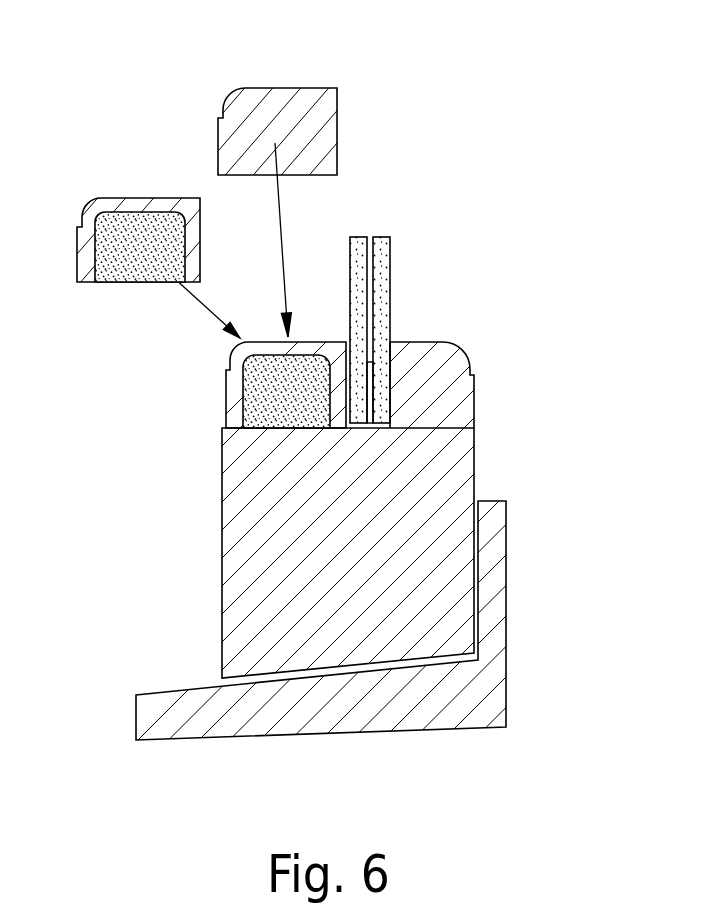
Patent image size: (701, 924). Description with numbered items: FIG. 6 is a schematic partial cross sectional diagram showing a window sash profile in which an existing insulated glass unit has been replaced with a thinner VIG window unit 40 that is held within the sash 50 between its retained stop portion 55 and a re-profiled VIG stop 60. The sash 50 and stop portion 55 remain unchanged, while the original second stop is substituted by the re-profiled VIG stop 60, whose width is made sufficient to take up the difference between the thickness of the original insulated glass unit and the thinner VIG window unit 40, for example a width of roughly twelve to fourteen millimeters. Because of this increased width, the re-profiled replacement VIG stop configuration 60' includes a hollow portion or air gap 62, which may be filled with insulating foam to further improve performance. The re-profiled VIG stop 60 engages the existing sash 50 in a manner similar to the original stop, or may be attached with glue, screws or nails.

The re-profiled VIG stop 60 is at (291, 118).
The re-profiled replacement VIG stop configuration 60' is at (151, 223).
The air gap 62 is at (118, 268).
The VIG window unit 40 is at (392, 272).
The stop portion 55 is at (463, 393).
The sash 50 is at (287, 593).